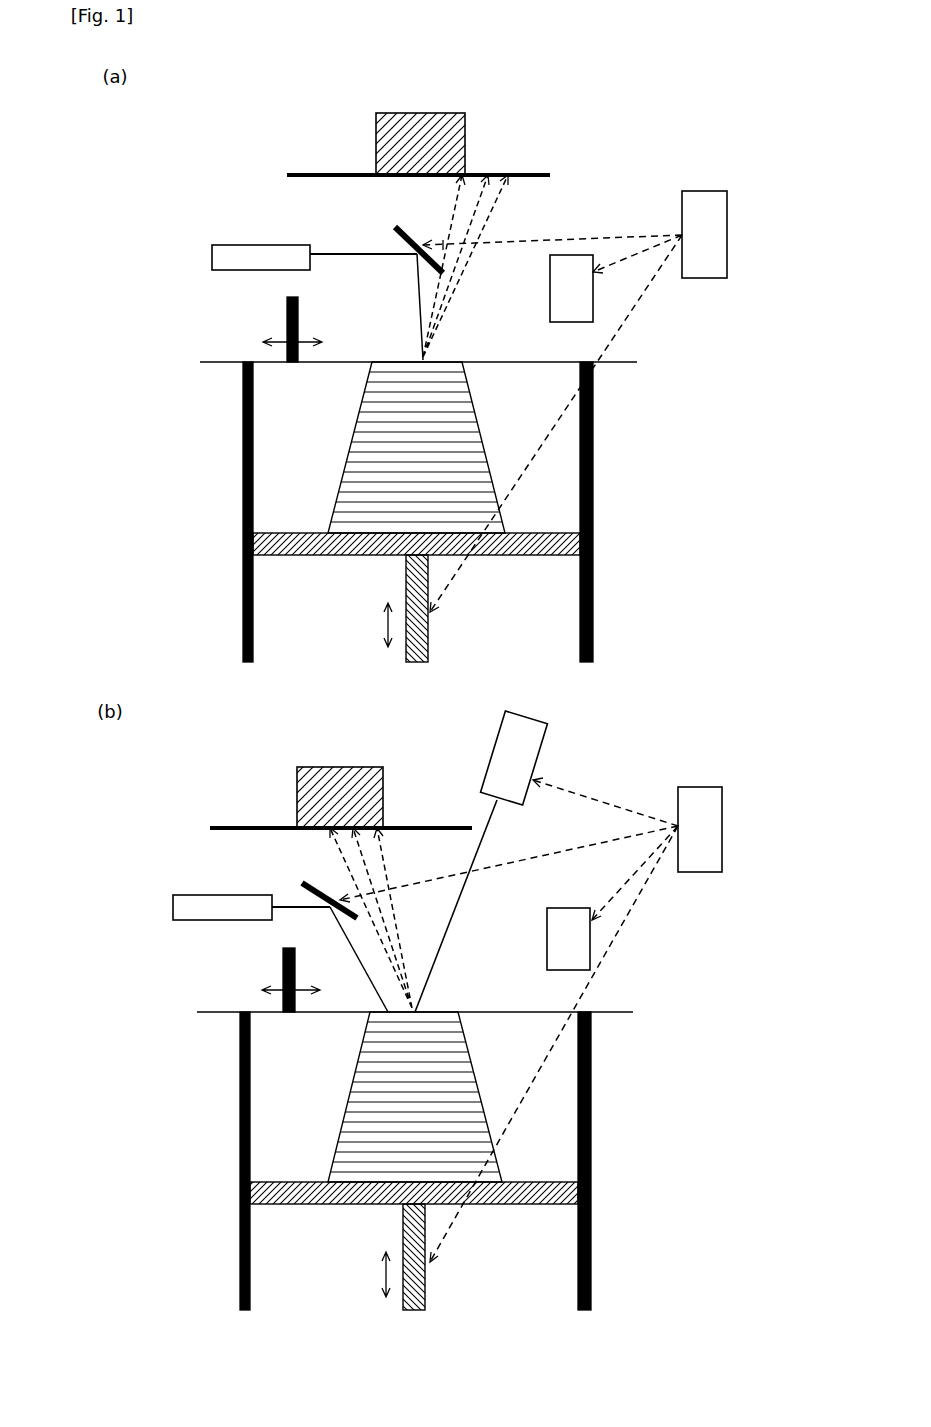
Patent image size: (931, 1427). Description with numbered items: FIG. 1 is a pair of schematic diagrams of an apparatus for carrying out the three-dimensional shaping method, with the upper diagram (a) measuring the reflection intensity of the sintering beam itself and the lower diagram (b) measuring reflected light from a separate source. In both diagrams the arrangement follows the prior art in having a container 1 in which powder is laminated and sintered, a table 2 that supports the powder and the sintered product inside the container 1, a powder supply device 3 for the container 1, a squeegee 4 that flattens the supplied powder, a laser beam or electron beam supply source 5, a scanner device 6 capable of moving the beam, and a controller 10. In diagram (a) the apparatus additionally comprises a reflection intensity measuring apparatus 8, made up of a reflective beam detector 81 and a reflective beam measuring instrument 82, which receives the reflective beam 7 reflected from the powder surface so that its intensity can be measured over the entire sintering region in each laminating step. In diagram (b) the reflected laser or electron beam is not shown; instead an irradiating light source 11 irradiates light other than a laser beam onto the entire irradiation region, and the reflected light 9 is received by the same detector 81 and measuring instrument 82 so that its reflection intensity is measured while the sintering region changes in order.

The container 1 is at (243, 422).
The table 2 is at (406, 594).
The powder supply device 3 is at (577, 298).
The squeegee 4 is at (287, 318).
The laser beam or electron beam supply source 5 is at (232, 258).
The scanner device 6 is at (415, 253).
The reflective beam 7 is at (493, 212).
The reflection intensity measuring apparatus 8 is at (368, 446).
The reflective beam detector 81 is at (533, 175).
The reflective beam measuring instrument 82 is at (349, 455).
The reflected light 9 is at (340, 857).
The controller 10 is at (710, 230).
The irradiating light source 11 is at (523, 760).